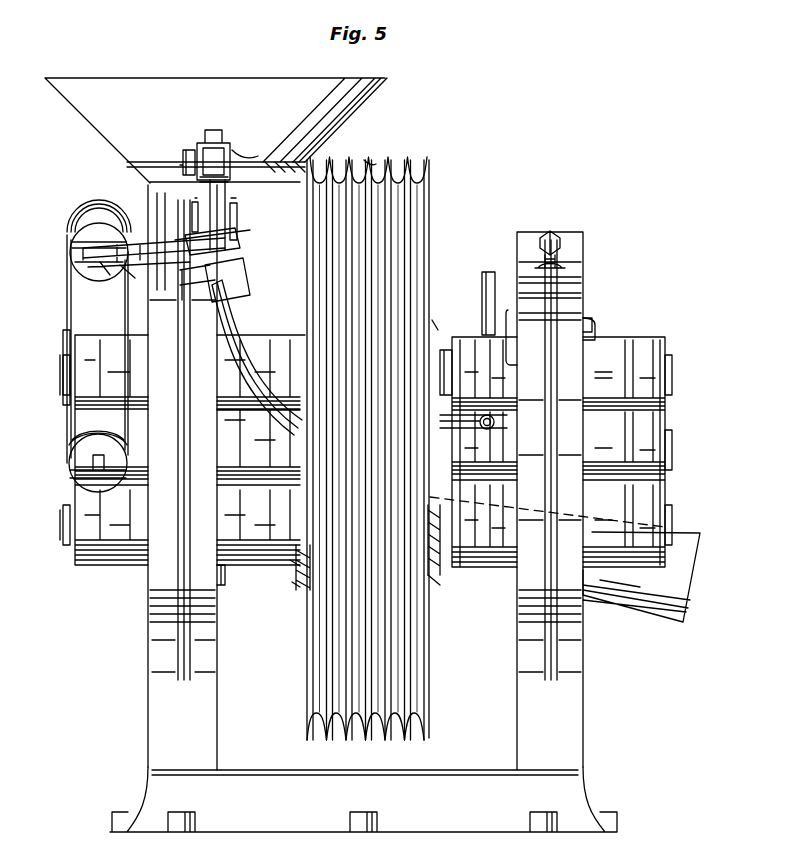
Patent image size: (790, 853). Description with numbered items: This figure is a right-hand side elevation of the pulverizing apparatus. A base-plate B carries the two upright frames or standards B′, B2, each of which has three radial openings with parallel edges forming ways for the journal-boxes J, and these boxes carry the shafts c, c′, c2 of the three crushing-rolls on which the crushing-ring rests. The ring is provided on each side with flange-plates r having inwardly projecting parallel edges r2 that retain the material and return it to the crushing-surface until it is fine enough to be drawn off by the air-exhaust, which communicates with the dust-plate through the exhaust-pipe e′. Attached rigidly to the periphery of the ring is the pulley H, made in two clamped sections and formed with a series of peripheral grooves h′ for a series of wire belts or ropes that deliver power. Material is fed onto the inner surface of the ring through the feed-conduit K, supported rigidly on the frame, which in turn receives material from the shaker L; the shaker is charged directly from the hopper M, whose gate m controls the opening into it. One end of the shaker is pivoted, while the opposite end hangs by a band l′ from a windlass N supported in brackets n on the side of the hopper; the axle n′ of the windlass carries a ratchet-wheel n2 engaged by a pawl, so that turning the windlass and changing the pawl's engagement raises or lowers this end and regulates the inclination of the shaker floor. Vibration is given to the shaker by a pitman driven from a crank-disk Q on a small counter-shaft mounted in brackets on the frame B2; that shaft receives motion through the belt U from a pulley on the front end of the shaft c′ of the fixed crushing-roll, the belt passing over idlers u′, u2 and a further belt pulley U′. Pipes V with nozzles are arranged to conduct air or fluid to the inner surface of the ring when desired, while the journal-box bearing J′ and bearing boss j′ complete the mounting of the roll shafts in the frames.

The hopper M is at (213, 137).
The bracket n is at (226, 145).
The ratchet-wheel n2 is at (188, 165).
The windlass N is at (245, 142).
The axle of the windlass n′ is at (290, 170).
The peripheral grooves h′ is at (372, 162).
The pulley H is at (460, 198).
The crank-disk Q is at (152, 240).
The band l′ is at (215, 232).
The shaker L is at (240, 240).
The gate m is at (243, 262).
The feed-conduit K is at (290, 323).
The belt U is at (97, 349).
The upper belt pulley U′ is at (100, 345).
The idler u′ is at (63, 400).
The idler u2 is at (75, 465).
The shaft of crushing-roll c2 is at (48, 527).
The shaft of the fixed crushing-roll c′ is at (678, 375).
The shaft of crushing-roll c is at (676, 450).
The journal-boxes J is at (370, 451).
The roller bearing J′ is at (220, 584).
The bearing boss j′ is at (600, 328).
The flange-plates r is at (296, 586).
The parallel edges r2 is at (292, 568).
The pipes V is at (483, 268).
The exhaust-pipe e′ is at (649, 577).
The frame or standard B′ is at (194, 477).
The frame or standard B2 is at (581, 630).
The base-plate B is at (398, 808).